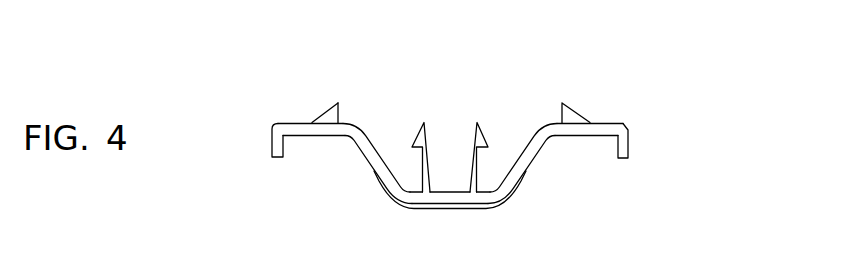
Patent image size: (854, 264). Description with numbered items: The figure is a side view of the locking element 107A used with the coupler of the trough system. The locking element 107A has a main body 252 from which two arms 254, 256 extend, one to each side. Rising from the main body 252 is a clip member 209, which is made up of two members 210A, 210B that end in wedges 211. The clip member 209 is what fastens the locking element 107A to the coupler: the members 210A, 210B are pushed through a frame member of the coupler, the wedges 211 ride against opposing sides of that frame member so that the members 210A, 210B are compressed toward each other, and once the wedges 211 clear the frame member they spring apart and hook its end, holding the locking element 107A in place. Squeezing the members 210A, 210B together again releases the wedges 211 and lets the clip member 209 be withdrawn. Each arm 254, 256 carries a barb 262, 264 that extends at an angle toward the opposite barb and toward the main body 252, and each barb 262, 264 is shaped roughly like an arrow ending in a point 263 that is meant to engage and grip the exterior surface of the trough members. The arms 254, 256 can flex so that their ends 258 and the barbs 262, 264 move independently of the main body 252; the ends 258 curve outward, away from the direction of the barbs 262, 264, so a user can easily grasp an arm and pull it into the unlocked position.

The locking element 107A is at (563, 68).
The clip member 209 is at (488, 86).
The member 210A is at (429, 165).
The member 210B is at (477, 177).
The wedges 211 is at (415, 140).
The main body 252 is at (449, 197).
The arm 254 is at (317, 135).
The arm 256 is at (584, 136).
The ends of arms 258 is at (273, 158).
The barb 262 is at (319, 120).
The point 263 is at (338, 103).
The barb 264 is at (575, 113).